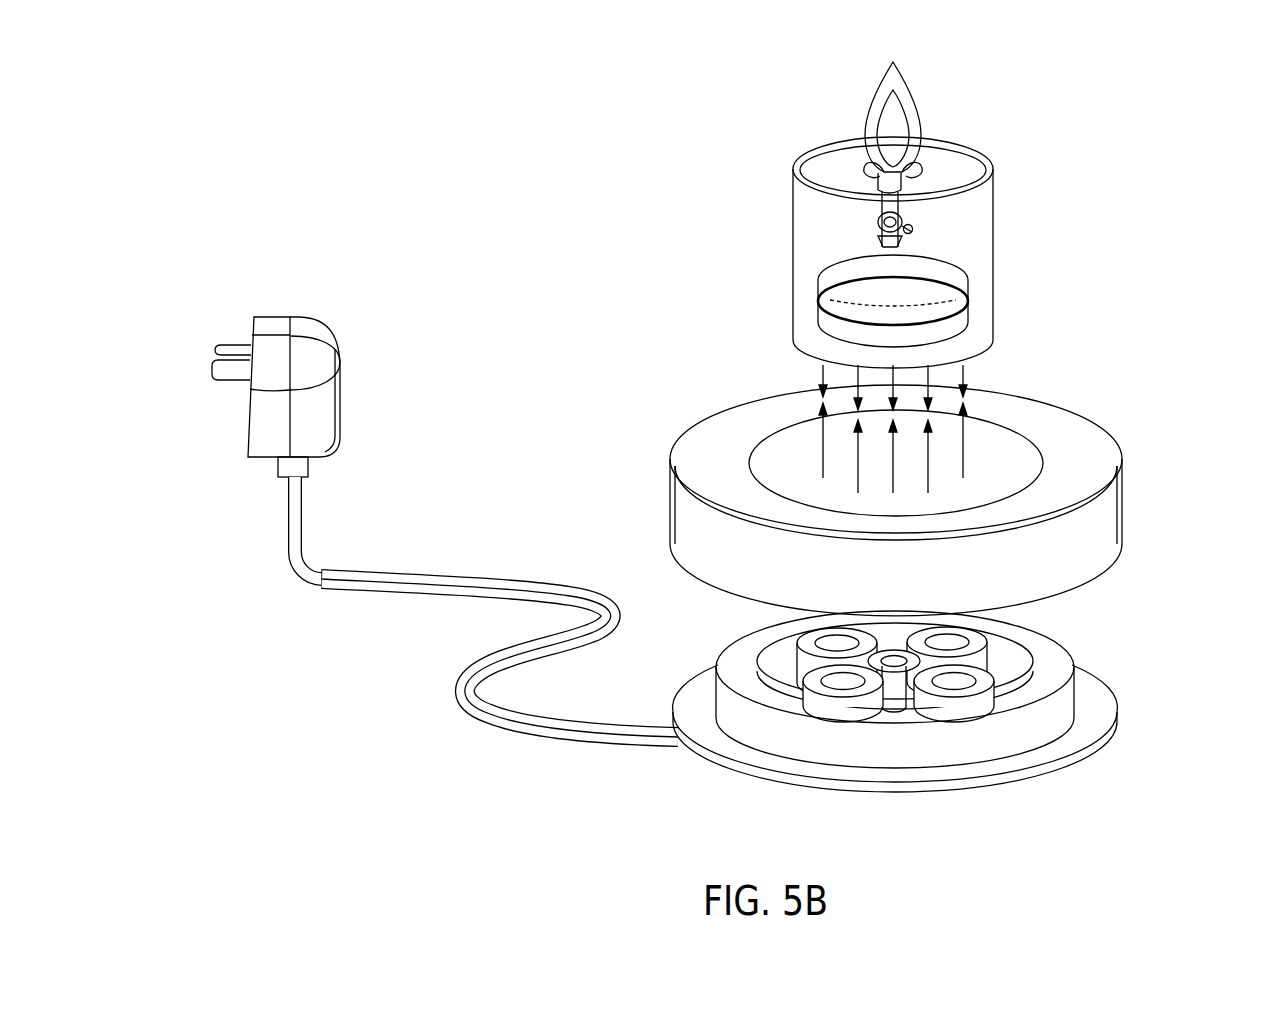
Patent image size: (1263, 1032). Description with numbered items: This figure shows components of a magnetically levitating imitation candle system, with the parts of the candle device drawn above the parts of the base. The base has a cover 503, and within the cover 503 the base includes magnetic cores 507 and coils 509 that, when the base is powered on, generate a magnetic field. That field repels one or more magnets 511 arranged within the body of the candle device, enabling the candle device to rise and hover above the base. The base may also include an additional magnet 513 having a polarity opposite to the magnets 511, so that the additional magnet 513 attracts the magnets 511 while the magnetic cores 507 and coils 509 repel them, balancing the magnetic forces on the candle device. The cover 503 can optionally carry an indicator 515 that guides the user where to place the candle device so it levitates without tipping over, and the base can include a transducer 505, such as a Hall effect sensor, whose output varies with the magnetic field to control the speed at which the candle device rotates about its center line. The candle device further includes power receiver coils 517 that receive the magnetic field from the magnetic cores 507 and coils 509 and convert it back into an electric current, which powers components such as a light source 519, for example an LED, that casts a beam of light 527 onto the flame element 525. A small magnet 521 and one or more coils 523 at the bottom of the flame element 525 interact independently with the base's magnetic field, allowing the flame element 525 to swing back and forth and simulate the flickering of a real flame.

The cover 503 is at (1077, 418).
The transducer 505 is at (893, 673).
The magnetic cores 507 is at (793, 627).
The coils 509 is at (777, 643).
The magnets 511 is at (815, 295).
The additional magnet 513 is at (1055, 707).
The indicator 515 is at (1043, 477).
The power receiver coils 517 is at (813, 330).
The light source 519 is at (872, 242).
The small magnet 521 is at (917, 215).
The coils 523 is at (913, 235).
The flame element 525 is at (900, 66).
The beam of light 527 is at (922, 112).